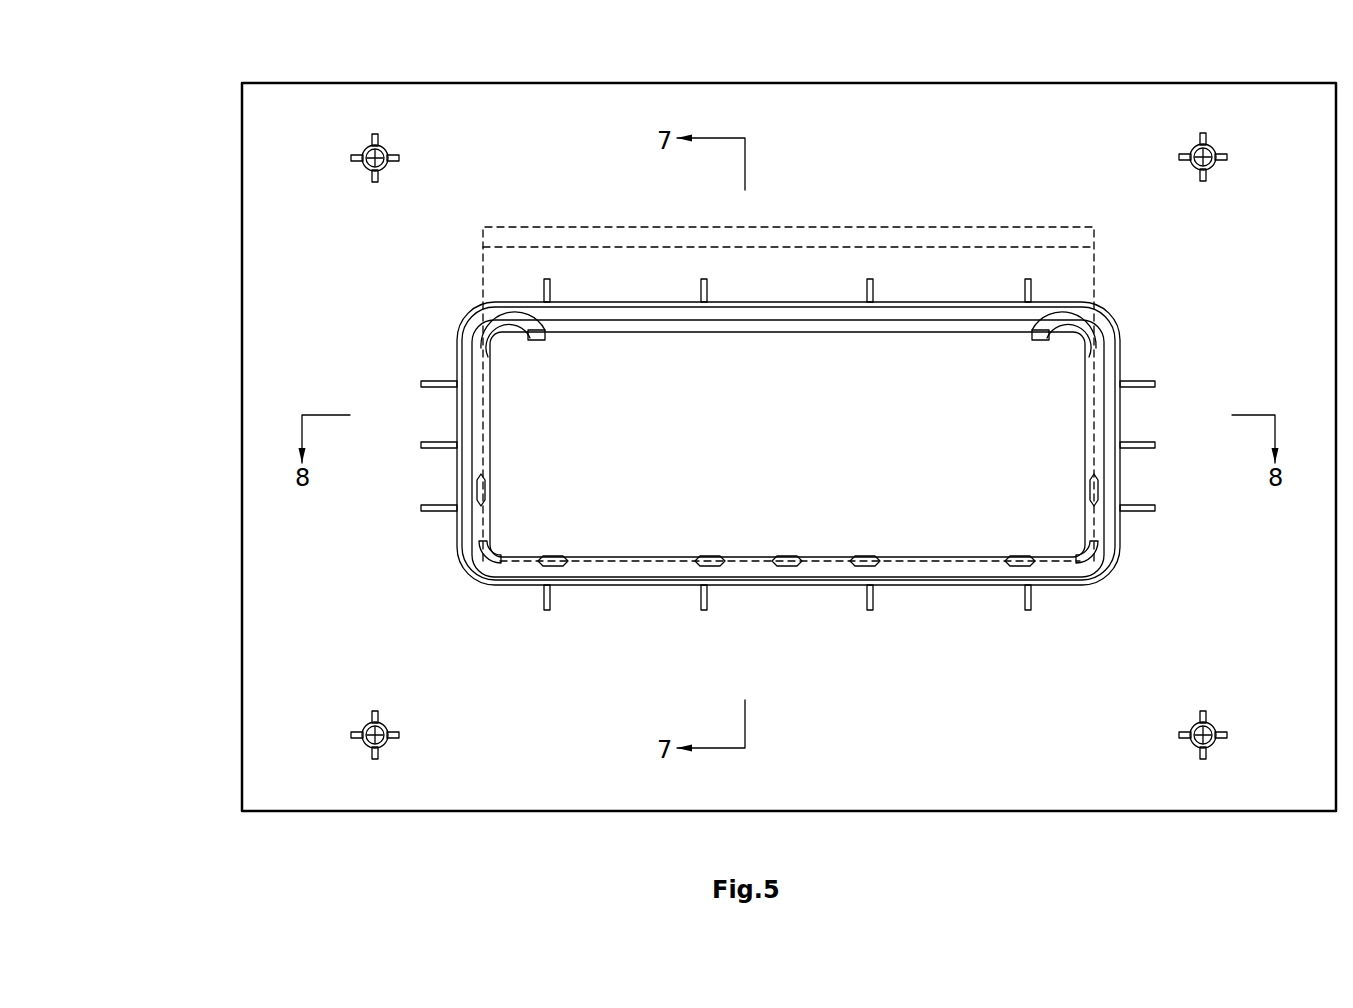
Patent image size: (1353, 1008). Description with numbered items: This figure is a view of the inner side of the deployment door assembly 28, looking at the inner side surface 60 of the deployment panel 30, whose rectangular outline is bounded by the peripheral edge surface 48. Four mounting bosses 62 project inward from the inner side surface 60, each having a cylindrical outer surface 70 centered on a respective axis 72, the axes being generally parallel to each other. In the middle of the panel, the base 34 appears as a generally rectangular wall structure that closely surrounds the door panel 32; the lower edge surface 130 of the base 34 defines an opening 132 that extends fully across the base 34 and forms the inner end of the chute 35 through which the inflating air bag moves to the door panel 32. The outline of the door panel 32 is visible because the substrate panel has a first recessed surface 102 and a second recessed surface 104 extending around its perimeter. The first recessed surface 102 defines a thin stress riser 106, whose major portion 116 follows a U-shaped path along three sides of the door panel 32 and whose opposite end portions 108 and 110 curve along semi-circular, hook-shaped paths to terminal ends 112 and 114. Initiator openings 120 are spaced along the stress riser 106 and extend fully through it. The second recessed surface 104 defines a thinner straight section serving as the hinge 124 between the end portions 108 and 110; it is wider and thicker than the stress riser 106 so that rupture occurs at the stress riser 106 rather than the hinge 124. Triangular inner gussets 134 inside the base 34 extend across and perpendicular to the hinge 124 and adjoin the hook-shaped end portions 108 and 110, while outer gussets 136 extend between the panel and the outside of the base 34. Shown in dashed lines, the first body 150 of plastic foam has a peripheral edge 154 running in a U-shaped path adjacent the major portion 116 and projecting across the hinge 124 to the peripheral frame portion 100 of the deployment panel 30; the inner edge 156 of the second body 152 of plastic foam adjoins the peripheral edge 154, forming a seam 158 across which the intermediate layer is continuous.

The deployment door assembly 28 is at (228, 58).
The deployment panel 30 is at (236, 163).
The door panel 32 is at (898, 365).
The base 34 is at (452, 472).
The chute 35 is at (790, 444).
The peripheral edge surface 48 is at (242, 248).
The inner side surface 60 is at (262, 340).
The mounting bosses 62 is at (386, 146).
The cylindrical outer surface 70 is at (388, 166).
The axis 72 is at (367, 171).
The peripheral frame portion 100 is at (930, 125).
The first recessed surface 102 is at (625, 557).
The second recessed surface 104 is at (745, 322).
The stress riser 106 is at (668, 553).
The first end portion of stress riser 108 is at (500, 320).
The second end portion of stress riser 110 is at (1078, 316).
The first terminal end 112 is at (531, 345).
The second terminal end 114 is at (1040, 345).
The major portion of stress riser 116 is at (918, 560).
The initiator openings 120 is at (492, 490).
The hinge 124 is at (820, 325).
The lower edge surface 130 is at (913, 580).
The opening 132 is at (960, 583).
The inner gussets 134 is at (560, 320).
The outer gussets 136 is at (1140, 384).
The first body of plastic foam 150 is at (652, 300).
The second body of plastic foam 152 is at (768, 225).
The peripheral edge 154 is at (965, 228).
The inner edge 156 is at (1010, 236).
The seam 158 is at (797, 228).